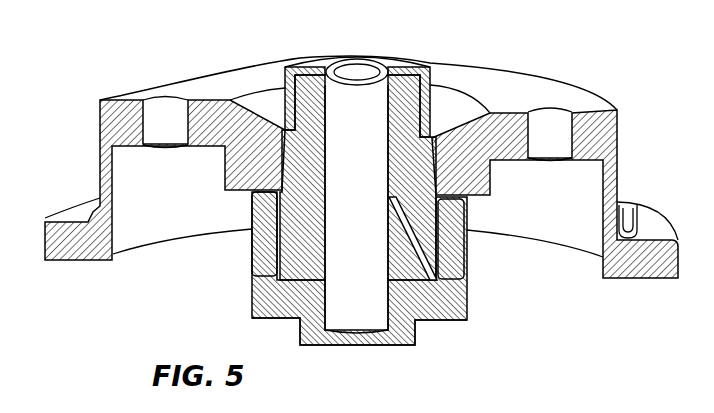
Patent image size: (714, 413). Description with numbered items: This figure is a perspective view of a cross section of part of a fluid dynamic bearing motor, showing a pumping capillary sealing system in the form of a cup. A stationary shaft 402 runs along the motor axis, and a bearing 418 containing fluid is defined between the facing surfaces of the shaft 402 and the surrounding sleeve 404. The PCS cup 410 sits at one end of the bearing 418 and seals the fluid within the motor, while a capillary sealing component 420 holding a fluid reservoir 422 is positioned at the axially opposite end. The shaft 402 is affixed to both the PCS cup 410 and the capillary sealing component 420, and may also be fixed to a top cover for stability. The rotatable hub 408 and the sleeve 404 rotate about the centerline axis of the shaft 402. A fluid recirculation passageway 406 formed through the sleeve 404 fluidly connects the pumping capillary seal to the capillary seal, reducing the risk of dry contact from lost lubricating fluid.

The shaft 402 is at (345, 287).
The sleeve 404 is at (333, 188).
The fluid recirculation passageway 406 is at (467, 283).
The hub 408 is at (210, 100).
The PCS cup 410 is at (305, 80).
The bearing 418 is at (262, 245).
The capillary sealing component 420 is at (467, 305).
The fluid reservoir 422 is at (464, 250).